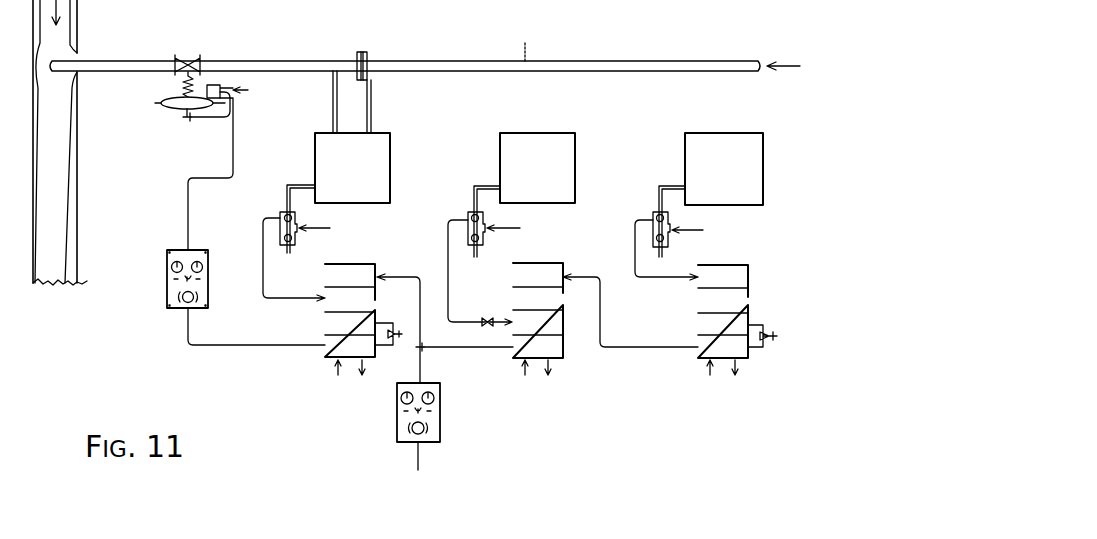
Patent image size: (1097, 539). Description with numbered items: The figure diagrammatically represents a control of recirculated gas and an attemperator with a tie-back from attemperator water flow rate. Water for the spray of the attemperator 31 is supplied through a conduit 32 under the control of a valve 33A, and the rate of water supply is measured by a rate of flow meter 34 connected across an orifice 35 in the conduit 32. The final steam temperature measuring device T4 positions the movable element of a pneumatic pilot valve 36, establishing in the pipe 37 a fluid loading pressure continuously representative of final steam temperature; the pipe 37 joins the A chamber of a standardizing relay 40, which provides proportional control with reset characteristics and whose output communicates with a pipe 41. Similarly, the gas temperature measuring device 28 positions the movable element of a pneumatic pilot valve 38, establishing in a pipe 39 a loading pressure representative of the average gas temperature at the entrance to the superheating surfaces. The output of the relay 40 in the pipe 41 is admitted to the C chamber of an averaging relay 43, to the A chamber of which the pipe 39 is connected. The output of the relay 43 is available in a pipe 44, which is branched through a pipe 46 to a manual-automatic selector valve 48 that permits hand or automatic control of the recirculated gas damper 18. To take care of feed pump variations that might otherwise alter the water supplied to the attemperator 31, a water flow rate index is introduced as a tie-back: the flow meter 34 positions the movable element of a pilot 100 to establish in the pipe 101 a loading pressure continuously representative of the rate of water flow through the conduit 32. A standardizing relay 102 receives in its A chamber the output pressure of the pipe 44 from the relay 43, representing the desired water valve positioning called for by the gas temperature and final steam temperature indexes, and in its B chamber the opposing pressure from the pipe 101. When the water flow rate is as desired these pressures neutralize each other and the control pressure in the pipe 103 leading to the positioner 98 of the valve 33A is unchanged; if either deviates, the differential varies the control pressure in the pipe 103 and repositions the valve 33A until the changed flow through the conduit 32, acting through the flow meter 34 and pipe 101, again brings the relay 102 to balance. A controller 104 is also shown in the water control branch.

The attemperator 31 is at (80, 186).
The conduit 32 is at (560, 62).
The valve 33A is at (182, 58).
The orifice 35 is at (362, 52).
The positioner 98 is at (218, 87).
The controller 104 is at (167, 258).
The pipe 103 is at (255, 345).
The rate of flow meter 34 is at (392, 141).
The pilot 100 is at (297, 242).
The pipe 101 is at (272, 305).
The standardizing relay 102 is at (367, 264).
The pipe 46 is at (418, 366).
The pipe 44 is at (453, 349).
The manual-automatic selector valve 48 is at (442, 428).
The recirculated gas damper 18 is at (418, 500).
The gas temperature measuring device 28 is at (577, 142).
The pneumatic pilot valve 38 is at (485, 243).
The pipe 39 is at (450, 284).
The averaging relay 43 is at (552, 263).
The pipe 41 is at (627, 348).
The final steam temperature measuring device T4 is at (748, 133).
The pneumatic pilot valve 36 is at (670, 243).
The pipe 37 is at (660, 282).
The standardizing relay 40 is at (748, 265).